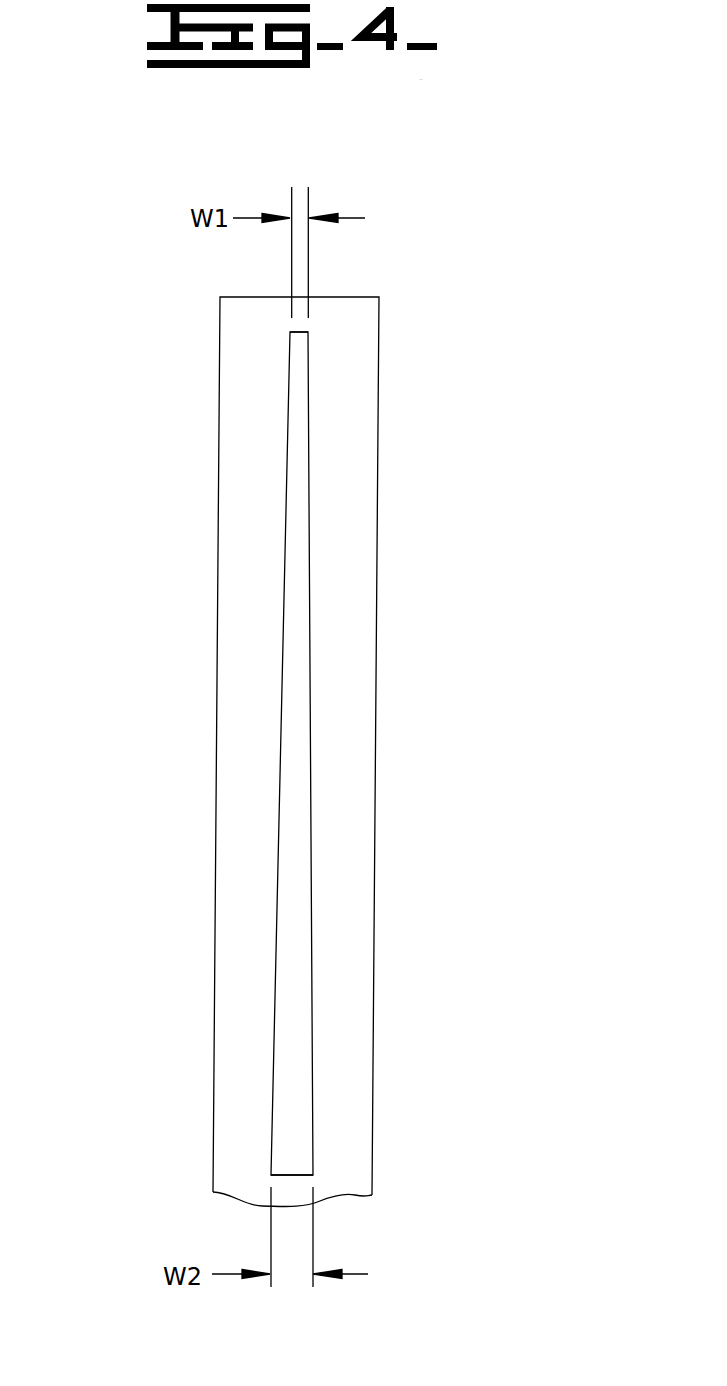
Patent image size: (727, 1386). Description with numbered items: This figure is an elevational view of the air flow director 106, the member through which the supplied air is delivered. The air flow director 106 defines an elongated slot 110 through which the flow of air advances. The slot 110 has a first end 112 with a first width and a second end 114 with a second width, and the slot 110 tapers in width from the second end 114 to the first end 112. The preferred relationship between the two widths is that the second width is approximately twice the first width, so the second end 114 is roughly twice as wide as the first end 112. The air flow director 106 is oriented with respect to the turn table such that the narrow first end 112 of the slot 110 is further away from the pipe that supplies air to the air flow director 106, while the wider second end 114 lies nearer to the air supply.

The air flow director 106 is at (237, 307).
The elongated slot 110 is at (310, 705).
The first end of slot 112 is at (309, 341).
The second end of slot 114 is at (313, 1168).